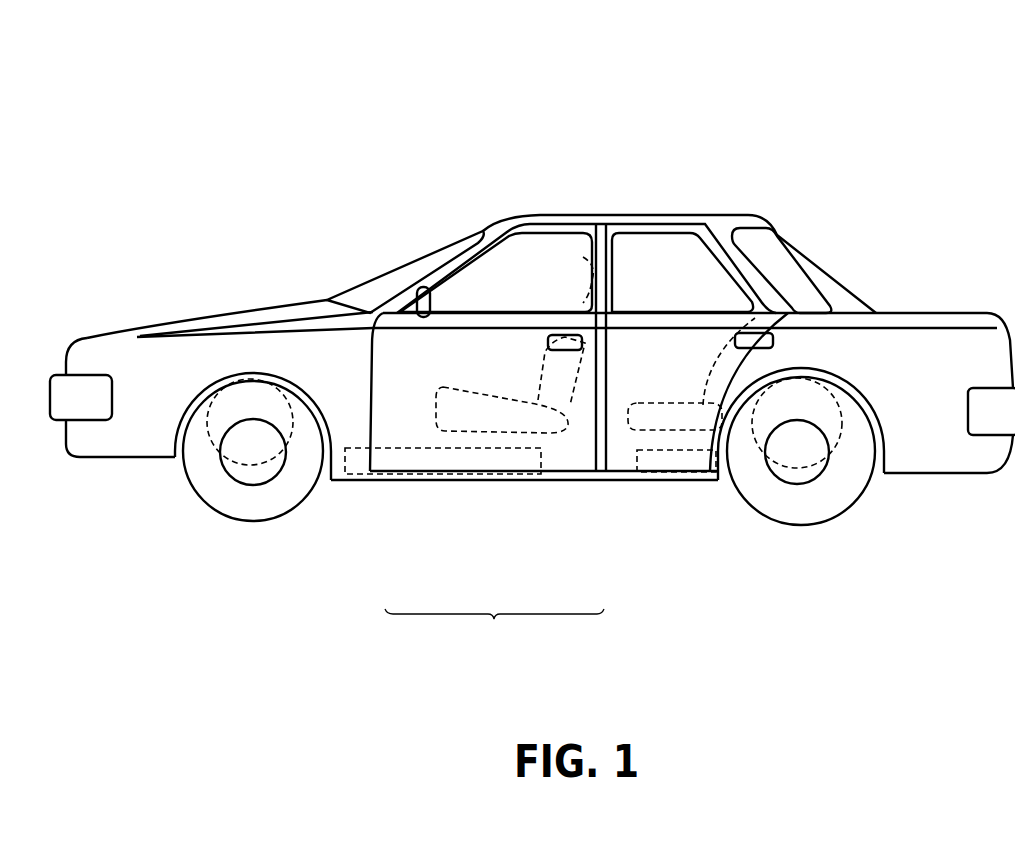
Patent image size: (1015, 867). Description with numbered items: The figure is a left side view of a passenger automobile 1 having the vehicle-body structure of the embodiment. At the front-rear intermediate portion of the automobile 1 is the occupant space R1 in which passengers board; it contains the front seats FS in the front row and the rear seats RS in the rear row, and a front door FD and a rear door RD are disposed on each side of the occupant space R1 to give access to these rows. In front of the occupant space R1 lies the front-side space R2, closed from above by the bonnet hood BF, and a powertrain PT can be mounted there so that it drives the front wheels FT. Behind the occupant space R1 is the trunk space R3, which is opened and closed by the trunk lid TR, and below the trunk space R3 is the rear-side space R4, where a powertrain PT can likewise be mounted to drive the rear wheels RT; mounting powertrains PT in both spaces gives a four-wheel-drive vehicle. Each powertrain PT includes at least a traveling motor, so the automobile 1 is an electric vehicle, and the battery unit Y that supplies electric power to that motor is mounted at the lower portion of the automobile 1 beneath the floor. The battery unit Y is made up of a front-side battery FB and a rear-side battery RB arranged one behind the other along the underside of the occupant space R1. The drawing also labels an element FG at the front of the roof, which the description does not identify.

The automobile 1 is at (487, 168).
The bonnet hood BF is at (207, 325).
The front-side space R2 is at (298, 363).
The front glass (windshield) FG is at (376, 278).
The front door FD is at (458, 346).
The occupant space R1 is at (556, 250).
The front seats FS is at (547, 410).
The rear door RD is at (667, 360).
The rear seats RS is at (703, 405).
The trunk space R3 is at (912, 360).
The trunk lid TR is at (957, 313).
The front wheels FT is at (222, 519).
The rear wheels RT is at (773, 523).
The rear-side space R4 is at (838, 467).
The powertrain PT is at (212, 440).
The front-side battery FB is at (340, 483).
The rear-side battery RB is at (610, 473).
The battery unit Y is at (494, 632).